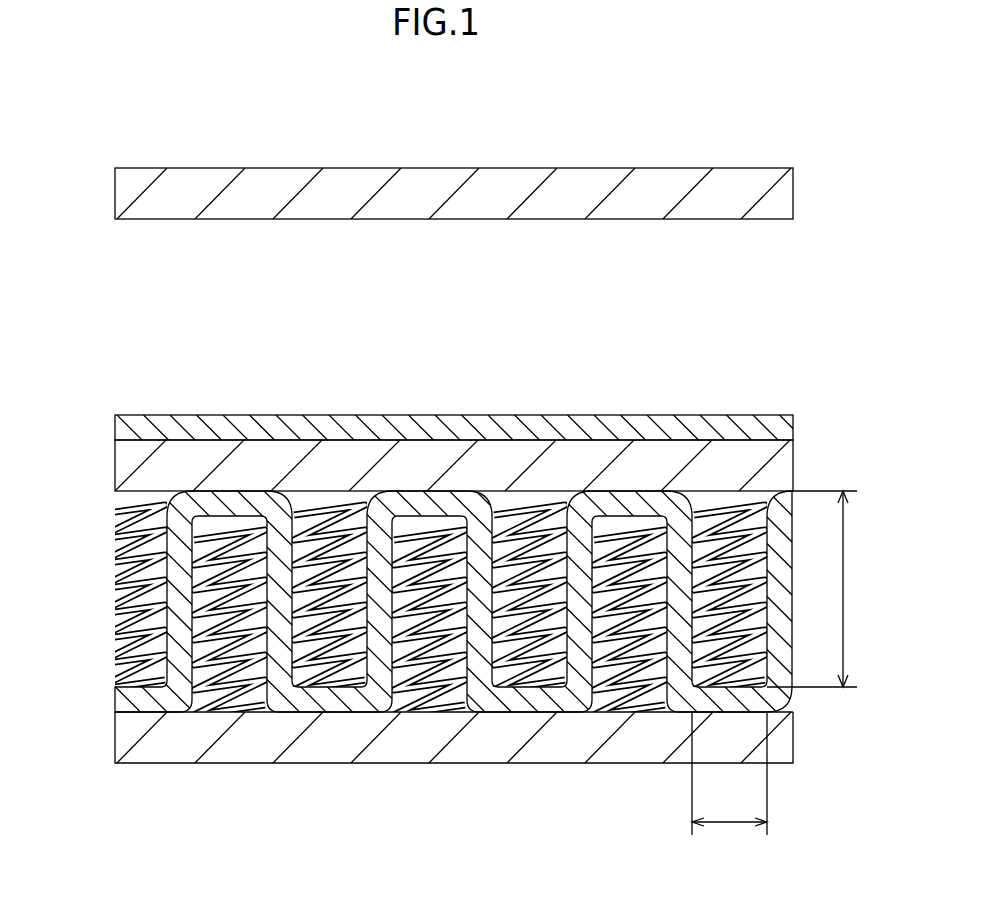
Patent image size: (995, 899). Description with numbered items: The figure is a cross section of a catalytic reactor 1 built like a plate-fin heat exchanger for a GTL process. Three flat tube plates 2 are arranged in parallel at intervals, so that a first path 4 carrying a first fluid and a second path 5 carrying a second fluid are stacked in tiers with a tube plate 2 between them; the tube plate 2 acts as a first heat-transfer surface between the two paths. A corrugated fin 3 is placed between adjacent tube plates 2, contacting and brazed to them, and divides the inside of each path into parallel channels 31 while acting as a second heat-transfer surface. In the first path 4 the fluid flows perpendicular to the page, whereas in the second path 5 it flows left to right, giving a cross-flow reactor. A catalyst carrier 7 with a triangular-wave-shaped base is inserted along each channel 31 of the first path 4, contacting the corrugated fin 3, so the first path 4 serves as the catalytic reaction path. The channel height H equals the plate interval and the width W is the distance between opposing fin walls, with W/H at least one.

The catalytic reactor 1 is at (581, 111).
The tube plate 2 is at (130, 198).
The corrugated fin 3 is at (138, 414).
The channel 31 is at (207, 706).
The first path 4 is at (421, 684).
The second path 5 is at (133, 325).
The catalyst carrier 7 is at (248, 705).